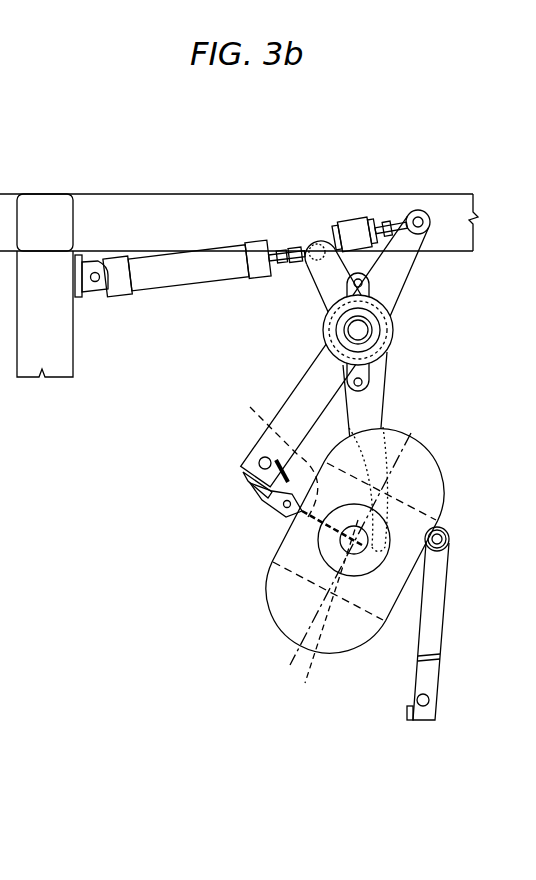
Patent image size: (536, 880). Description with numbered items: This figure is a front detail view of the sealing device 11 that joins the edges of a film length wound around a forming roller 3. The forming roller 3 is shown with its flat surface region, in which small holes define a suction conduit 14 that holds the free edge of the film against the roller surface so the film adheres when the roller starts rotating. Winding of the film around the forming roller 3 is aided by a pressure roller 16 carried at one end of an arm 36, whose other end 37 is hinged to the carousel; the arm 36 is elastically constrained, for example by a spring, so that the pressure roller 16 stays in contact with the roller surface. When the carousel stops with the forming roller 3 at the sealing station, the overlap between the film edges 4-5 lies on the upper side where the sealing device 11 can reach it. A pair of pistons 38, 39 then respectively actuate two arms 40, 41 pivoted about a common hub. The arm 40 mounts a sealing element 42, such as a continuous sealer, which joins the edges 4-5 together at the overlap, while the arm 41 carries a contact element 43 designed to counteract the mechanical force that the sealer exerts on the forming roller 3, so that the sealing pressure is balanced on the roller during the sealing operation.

The forming roller 3 is at (302, 610).
The edges of the film portion 4-5 is at (298, 518).
The sealing device 11 is at (207, 441).
The suction conduit 14 is at (273, 451).
The pressure roller 16 is at (447, 531).
The arm 36 is at (422, 642).
The other end of arm 37 is at (424, 706).
The piston 38 is at (170, 274).
The piston 39 is at (349, 221).
The arm 40 is at (318, 380).
The arm 41 is at (372, 410).
The sealing element 42 is at (292, 513).
The contact element 43 is at (321, 612).